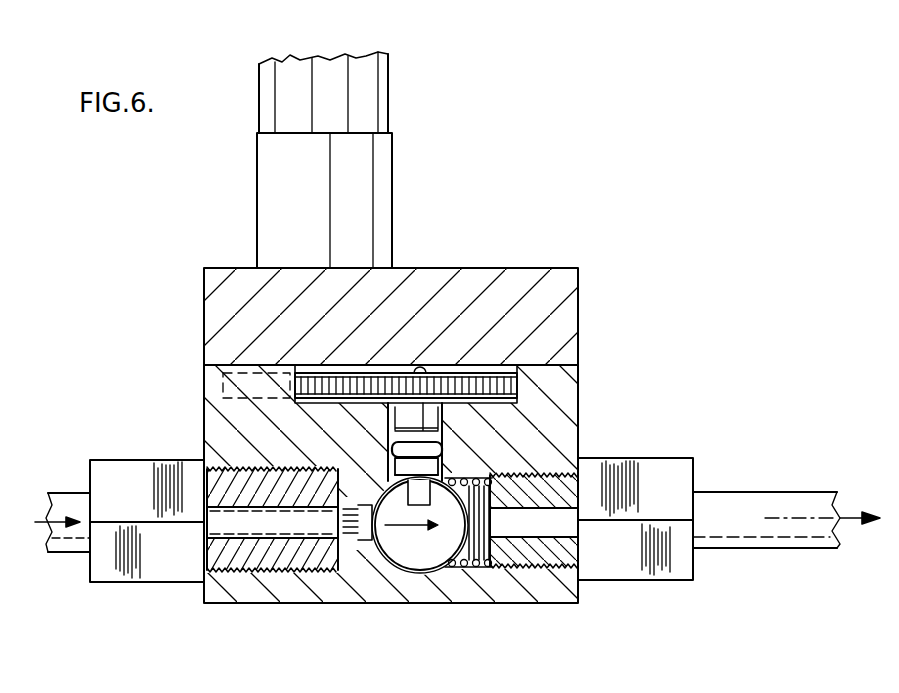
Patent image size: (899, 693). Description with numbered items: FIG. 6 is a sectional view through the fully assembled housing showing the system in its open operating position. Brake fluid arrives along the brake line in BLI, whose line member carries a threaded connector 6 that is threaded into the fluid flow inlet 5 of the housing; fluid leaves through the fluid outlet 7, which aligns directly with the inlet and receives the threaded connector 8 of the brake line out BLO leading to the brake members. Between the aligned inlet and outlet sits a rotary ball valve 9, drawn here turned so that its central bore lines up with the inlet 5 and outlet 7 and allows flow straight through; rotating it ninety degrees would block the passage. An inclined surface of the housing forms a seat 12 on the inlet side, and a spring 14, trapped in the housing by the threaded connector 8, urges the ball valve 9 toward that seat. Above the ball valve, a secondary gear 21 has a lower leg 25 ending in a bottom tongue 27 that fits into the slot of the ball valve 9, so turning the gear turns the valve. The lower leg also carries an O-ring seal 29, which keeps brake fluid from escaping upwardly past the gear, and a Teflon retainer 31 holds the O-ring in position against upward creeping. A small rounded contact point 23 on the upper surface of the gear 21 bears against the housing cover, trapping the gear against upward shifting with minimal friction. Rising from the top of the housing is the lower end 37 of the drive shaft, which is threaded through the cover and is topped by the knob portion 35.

The fluid flow inlet 5 is at (273, 528).
The threaded connector 6 is at (145, 470).
The fluid outlet 7 is at (541, 525).
The threaded connector 8 is at (688, 478).
The rotary ball valve 9 is at (410, 545).
The seat 12 is at (372, 503).
The spring 14 is at (472, 570).
The secondary gear 21 is at (467, 400).
The rounded contact point 23 is at (420, 365).
The lower leg 25 is at (455, 461).
The bottom tongue 27 is at (432, 469).
The O-ring seal 29 is at (448, 443).
The Teflon retainer 31 is at (446, 428).
The knob 35 is at (391, 89).
The lower end of the shaft 37 is at (392, 202).
The brake line in BLI is at (62, 553).
The brake line out BLO is at (750, 538).